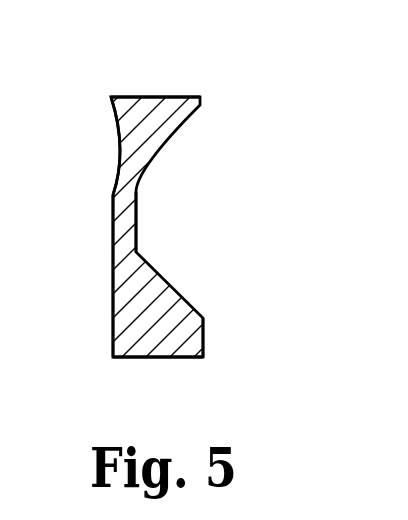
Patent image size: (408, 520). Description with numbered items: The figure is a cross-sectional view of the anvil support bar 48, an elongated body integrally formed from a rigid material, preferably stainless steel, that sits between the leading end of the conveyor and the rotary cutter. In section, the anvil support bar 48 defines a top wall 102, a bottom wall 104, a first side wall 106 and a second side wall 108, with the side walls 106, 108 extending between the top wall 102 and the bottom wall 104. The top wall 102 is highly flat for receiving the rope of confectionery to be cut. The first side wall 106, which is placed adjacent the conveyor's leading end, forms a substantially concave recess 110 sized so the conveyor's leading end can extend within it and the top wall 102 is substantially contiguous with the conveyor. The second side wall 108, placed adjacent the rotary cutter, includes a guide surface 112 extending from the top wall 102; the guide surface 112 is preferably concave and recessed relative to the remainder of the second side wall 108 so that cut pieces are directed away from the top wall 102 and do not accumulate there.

The anvil support bar 48 is at (231, 98).
The top wall 102 is at (154, 97).
The bottom wall 104 is at (161, 357).
The first side wall 106 is at (204, 339).
The second side wall 108 is at (113, 295).
The recess 110 is at (137, 223).
The guide surface 112 is at (118, 162).